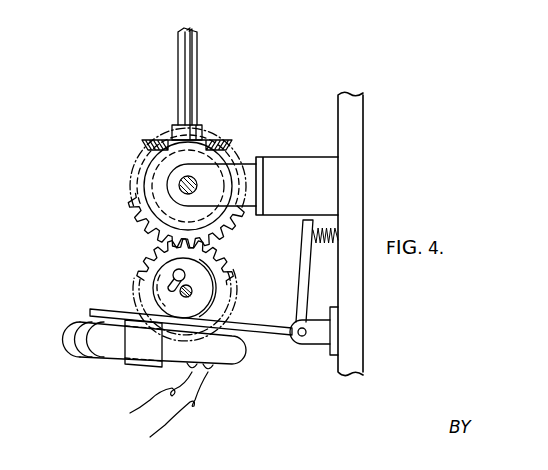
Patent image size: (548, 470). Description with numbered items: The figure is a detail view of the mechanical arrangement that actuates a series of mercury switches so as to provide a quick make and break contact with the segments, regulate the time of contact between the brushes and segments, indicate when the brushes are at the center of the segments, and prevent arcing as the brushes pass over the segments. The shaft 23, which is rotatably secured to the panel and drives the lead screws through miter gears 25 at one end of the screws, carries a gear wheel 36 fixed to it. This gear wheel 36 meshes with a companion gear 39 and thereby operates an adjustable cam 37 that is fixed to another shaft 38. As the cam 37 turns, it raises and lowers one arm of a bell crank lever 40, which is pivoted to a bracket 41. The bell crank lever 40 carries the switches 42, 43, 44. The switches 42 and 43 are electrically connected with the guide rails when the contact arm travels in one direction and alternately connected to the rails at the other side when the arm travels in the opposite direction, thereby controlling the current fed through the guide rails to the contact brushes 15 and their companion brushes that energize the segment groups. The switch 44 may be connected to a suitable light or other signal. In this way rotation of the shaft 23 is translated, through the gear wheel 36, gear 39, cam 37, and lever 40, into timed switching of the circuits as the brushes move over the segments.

The contact brushes 15 is at (182, 62).
The miter gears 25 is at (156, 140).
The shaft 23 is at (183, 183).
The gear wheel 36 is at (150, 215).
The gear 39 is at (233, 266).
The shaft 38 is at (192, 291).
The adjustable cam 37 is at (157, 300).
The bell crank lever 40 is at (271, 336).
The bracket 41 is at (321, 346).
The switch 42 is at (104, 358).
The switch 43 is at (82, 358).
The switch 44 is at (66, 343).